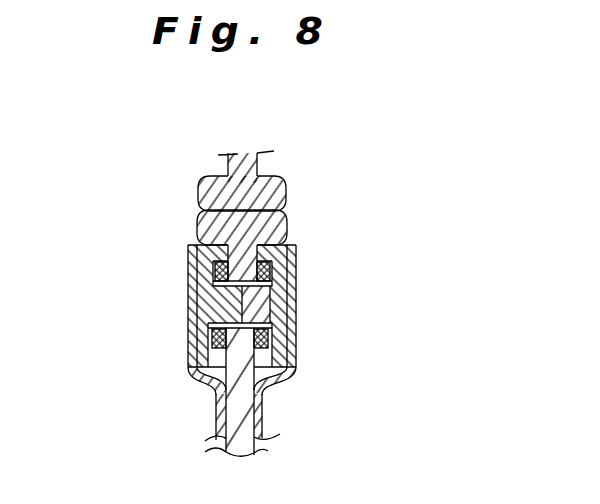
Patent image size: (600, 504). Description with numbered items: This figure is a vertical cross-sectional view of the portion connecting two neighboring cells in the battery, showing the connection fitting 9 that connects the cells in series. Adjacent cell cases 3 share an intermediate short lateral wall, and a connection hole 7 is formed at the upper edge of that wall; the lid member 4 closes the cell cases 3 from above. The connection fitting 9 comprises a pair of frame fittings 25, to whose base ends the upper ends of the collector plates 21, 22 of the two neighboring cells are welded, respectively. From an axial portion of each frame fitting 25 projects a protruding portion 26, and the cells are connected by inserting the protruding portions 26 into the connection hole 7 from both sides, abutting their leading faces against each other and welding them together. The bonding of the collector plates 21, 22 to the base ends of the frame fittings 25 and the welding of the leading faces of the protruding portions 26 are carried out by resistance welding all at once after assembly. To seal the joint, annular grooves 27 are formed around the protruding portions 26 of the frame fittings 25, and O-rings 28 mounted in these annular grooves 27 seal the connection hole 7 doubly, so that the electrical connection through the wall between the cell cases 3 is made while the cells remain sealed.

The cell case 3 is at (52, 325).
The lid member 4 is at (270, 186).
The connection hole 7 is at (190, 325).
The connection fitting 9 is at (298, 298).
The collector plate 21 is at (263, 410).
The collector plate 22 is at (218, 421).
The frame fitting 25 is at (190, 368).
The protruding portion 26 is at (210, 293).
The annular groove 27 is at (202, 352).
The O-ring 28 is at (205, 261).